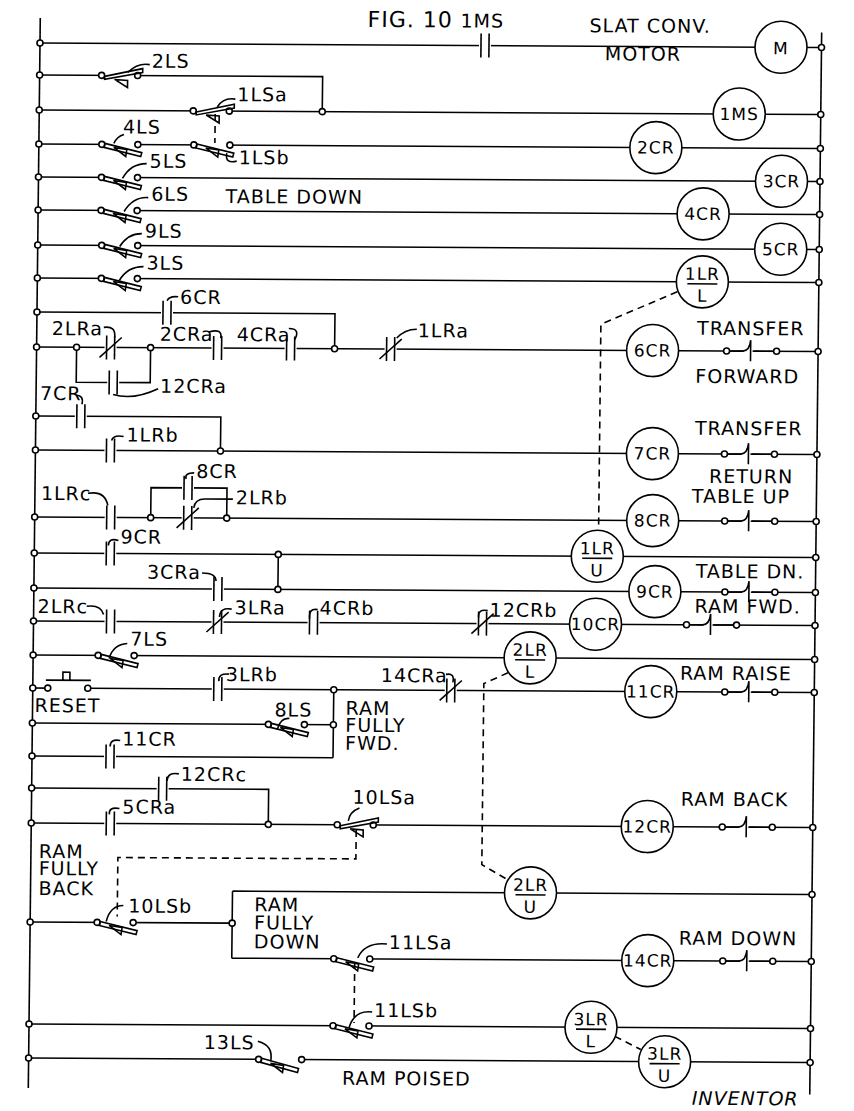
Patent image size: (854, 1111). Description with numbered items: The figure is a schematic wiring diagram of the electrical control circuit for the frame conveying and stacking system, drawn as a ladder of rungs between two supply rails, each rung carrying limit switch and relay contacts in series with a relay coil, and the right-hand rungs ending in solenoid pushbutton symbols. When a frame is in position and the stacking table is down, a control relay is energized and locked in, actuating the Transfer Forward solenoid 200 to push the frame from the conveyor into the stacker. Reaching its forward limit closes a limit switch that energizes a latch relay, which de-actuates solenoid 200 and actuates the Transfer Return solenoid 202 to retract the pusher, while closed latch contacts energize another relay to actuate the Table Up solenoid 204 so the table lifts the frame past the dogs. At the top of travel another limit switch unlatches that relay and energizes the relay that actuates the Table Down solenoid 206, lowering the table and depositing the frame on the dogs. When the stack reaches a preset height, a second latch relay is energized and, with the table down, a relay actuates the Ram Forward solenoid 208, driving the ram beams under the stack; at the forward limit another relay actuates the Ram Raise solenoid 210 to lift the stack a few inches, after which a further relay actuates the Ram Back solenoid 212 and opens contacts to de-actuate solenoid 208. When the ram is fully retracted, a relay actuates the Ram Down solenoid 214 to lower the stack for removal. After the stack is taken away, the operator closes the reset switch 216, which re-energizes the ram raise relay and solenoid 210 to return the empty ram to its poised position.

The Transfer Forward solenoid 200 is at (748, 352).
The Transfer Return solenoid 202 is at (742, 443).
The Table Up solenoid 204 is at (752, 528).
The Table Down solenoid 206 is at (745, 580).
The Ram Forward solenoid 208 is at (719, 631).
The Ram Raise solenoid 210 is at (749, 699).
The Ram Back solenoid 212 is at (758, 833).
The Ram Down solenoid 214 is at (750, 969).
The reset switch 216 is at (100, 679).